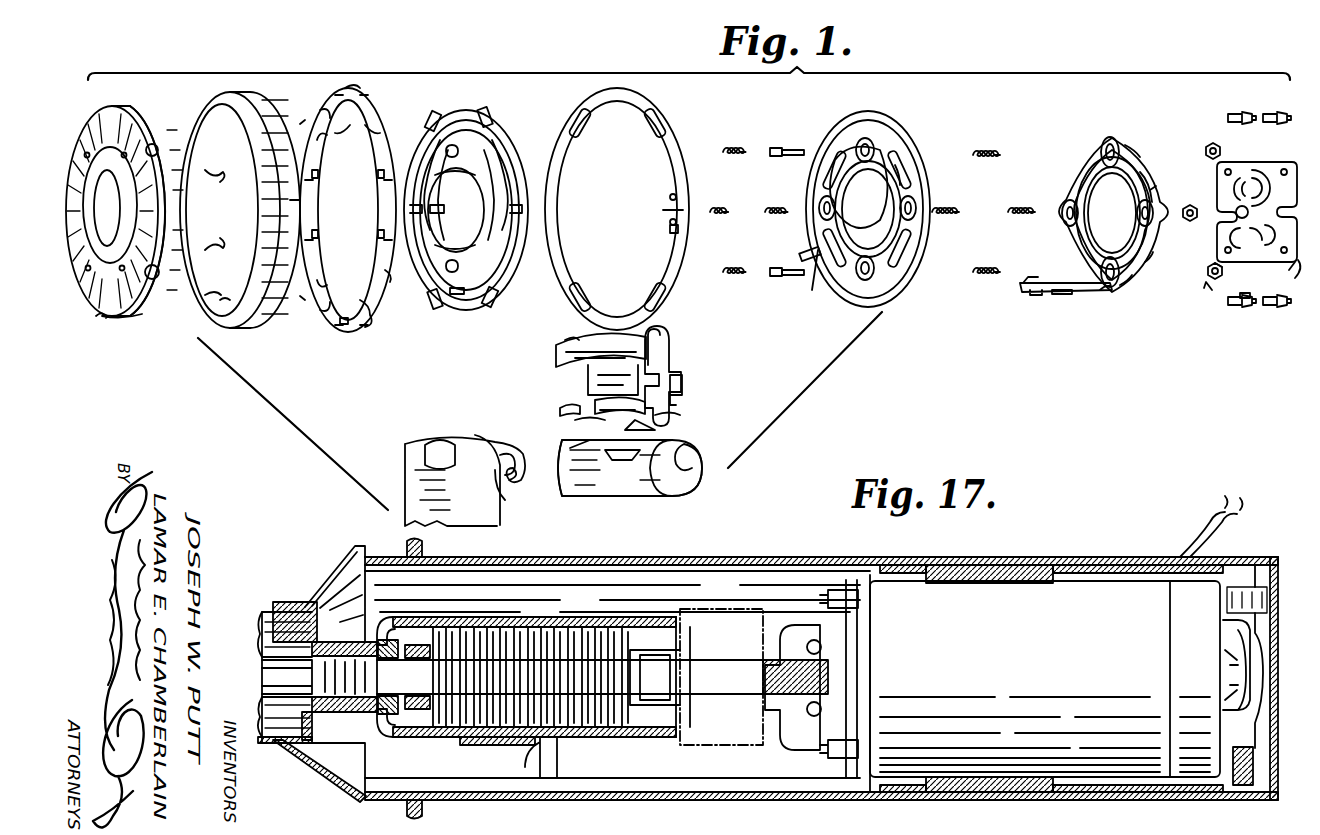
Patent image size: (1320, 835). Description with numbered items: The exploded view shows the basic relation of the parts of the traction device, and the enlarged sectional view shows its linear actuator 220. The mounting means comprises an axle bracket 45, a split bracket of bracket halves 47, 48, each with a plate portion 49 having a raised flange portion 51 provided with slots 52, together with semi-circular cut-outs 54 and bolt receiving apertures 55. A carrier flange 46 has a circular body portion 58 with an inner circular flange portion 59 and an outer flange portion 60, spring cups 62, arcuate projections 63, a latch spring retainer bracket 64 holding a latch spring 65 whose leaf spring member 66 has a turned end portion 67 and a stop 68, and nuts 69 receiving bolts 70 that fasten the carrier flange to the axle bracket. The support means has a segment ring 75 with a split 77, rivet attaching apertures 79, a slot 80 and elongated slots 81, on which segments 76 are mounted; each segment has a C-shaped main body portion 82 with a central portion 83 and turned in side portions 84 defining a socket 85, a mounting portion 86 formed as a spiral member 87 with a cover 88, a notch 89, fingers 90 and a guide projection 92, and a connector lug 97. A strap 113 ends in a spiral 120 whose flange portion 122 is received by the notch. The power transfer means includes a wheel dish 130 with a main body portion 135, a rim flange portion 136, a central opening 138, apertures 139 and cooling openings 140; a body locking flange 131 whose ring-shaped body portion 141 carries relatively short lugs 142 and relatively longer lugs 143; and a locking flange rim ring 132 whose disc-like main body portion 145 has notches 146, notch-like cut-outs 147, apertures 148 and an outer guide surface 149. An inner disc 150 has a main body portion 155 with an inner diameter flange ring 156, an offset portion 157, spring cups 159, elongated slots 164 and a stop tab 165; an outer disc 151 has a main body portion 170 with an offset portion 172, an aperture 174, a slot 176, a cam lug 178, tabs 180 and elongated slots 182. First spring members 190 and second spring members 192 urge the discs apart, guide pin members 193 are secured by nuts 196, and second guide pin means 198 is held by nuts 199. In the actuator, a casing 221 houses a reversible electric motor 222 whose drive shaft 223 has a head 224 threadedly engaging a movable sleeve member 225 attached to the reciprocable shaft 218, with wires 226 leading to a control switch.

In FIG. 1, the wheel dish 130 is at (136, 80).
In FIG. 1, the body locking flange 131 is at (235, 73).
In FIG. 1, the locking flange rim ring 132 is at (360, 76).
In FIG. 1, the main body portion 135 is at (155, 104).
In FIG. 1, the rim flange portion 136 is at (198, 337).
In FIG. 1, the central opening 138 is at (120, 195).
In FIG. 1, the apertures 139 is at (124, 245).
In FIG. 1, the openings 140 is at (115, 316).
In FIG. 1, the ring-shaped body portion 141 is at (250, 325).
In FIG. 1, the relatively short lugs 142 is at (225, 232).
In FIG. 1, the relatively longer lugs 143 is at (308, 119).
In FIG. 1, the disc-like main body portion 145 is at (323, 214).
In FIG. 1, the notches 146 is at (377, 313).
In FIG. 1, the notch-like cut-outs 147 is at (355, 149).
In FIG. 1, the apertures 148 is at (376, 234).
In FIG. 1, the outer guide surface 149 is at (360, 93).
In FIG. 1, the inner disc 150 is at (918, 100).
In FIG. 1, the outer disc 151 is at (540, 100).
In FIG. 1, the disc-like main body portion 155 is at (905, 142).
In FIG. 1, the inner diameter flange ring 156 is at (864, 218).
In FIG. 1, the offset portion 157 is at (860, 138).
In FIG. 1, the spring cups 159 is at (848, 142).
In FIG. 1, the elongated slots 164 is at (905, 178).
In FIG. 1, the stop tab 165 is at (830, 288).
In FIG. 1, the disc-like main body portion 170 is at (478, 150).
In FIG. 1, the offset portion 172 is at (500, 155).
In FIG. 1, the aperture 174 is at (455, 145).
In FIG. 1, the slot 176 is at (460, 305).
In FIG. 1, the cam lug 178 is at (397, 280).
In FIG. 1, the tabs 180 is at (428, 118).
In FIG. 1, the elongated slots 182 is at (474, 232).
In FIG. 1, the first spring members 190 is at (1015, 142).
In FIG. 1, the second spring members 192 is at (772, 204).
In FIG. 1, the guide pin members 193 is at (790, 128).
In FIG. 1, the second guide pin means 198 is at (456, 210).
In FIG. 1, the segment ring 75 is at (703, 121).
In FIG. 1, the segments 76 is at (707, 409).
In FIG. 1, the split 77 is at (662, 210).
In FIG. 1, the rivet attaching apertures 79 is at (670, 198).
In FIG. 1, the slot 80 is at (672, 230).
In FIG. 1, the elongated slots 81 is at (640, 127).
In FIG. 1, the C-shaped main body portion 82 is at (674, 334).
In FIG. 1, the central portion 83 is at (672, 350).
In FIG. 1, the turned in side portions 84 is at (561, 334).
In FIG. 1, the socket 85 is at (576, 385).
In FIG. 1, the mounting portion 86 is at (629, 506).
In FIG. 1, the spiral member 87 is at (705, 486).
In FIG. 1, the cover 88 is at (560, 482).
In FIG. 1, the notch 89 is at (620, 452).
In FIG. 1, the fingers 90 is at (560, 424).
In FIG. 1, the guide projection 92 is at (613, 409).
In FIG. 1, the connector lug 97 is at (685, 385).
In FIG. 1, the strap 113 is at (405, 478).
In FIG. 1, the spiral 120 is at (498, 486).
In FIG. 1, the flange portion 122 is at (454, 447).
In FIG. 1, the carrier flange 46 is at (1130, 117).
In FIG. 1, the bracket half 47 is at (1273, 156).
In FIG. 1, the axle bracket 45 is at (1231, 295).
In FIG. 1, the bracket half 48 is at (1290, 277).
In FIG. 1, the plate portion 49 is at (1232, 140).
In FIG. 1, the raised flange portion 51 is at (1225, 178).
In FIG. 1, the slots 52 is at (1238, 190).
In FIG. 1, the semi-circular cut-outs 54 is at (1260, 164).
In FIG. 1, the bolt receiving apertures 55 is at (1225, 258).
In FIG. 1, the circular body portion 58 is at (1154, 155).
In FIG. 1, the inner circular flange portion 59 is at (1112, 213).
In FIG. 1, the outer flange portion 60 is at (1160, 175).
In FIG. 1, the spring cup 62 is at (1108, 142).
In FIG. 1, the arcuate projections 63 is at (1140, 140).
In FIG. 1, the latch spring retainer bracket 64 is at (1124, 292).
In FIG. 1, the latch spring 65 is at (1073, 308).
In FIG. 1, the leaf spring member 66 is at (1098, 300).
In FIG. 1, the turned end portion 67 is at (1020, 285).
In FIG. 1, the stop 68 is at (1055, 300).
In FIG. 1, the nuts 69 is at (1152, 275).
In FIG. 1, the bolts 70 is at (1245, 114).
In FIG. 1, the nuts 196 is at (1210, 282).
In FIG. 1, the nuts 199 is at (1240, 220).
In FIG. 17, the reciprocable shaft 218 is at (260, 657).
In FIG. 17, the linear actuator 220 is at (991, 534).
In FIG. 17, the casing 221 is at (848, 555).
In FIG. 17, the reversible electric motor 222 is at (1080, 588).
In FIG. 17, the drive shaft 223 is at (735, 667).
In FIG. 17, the head 224 is at (681, 718).
In FIG. 17, the movable sleeve member 225 is at (483, 739).
In FIG. 17, the wires 226 is at (1215, 514).